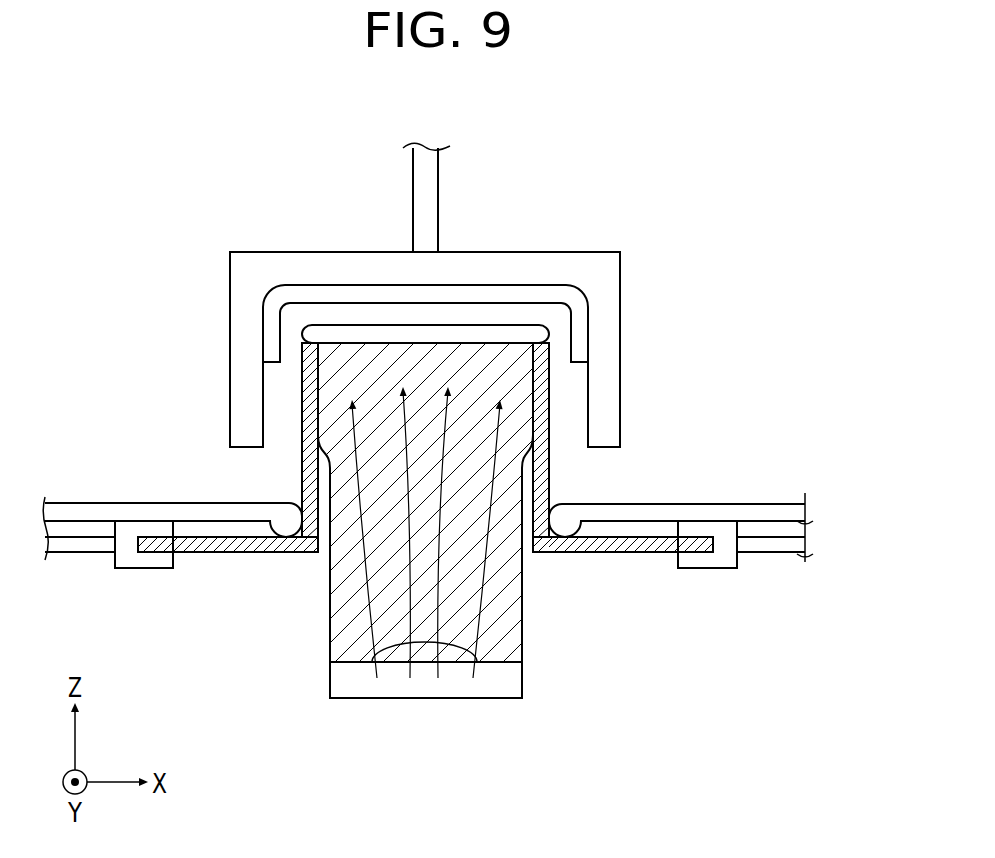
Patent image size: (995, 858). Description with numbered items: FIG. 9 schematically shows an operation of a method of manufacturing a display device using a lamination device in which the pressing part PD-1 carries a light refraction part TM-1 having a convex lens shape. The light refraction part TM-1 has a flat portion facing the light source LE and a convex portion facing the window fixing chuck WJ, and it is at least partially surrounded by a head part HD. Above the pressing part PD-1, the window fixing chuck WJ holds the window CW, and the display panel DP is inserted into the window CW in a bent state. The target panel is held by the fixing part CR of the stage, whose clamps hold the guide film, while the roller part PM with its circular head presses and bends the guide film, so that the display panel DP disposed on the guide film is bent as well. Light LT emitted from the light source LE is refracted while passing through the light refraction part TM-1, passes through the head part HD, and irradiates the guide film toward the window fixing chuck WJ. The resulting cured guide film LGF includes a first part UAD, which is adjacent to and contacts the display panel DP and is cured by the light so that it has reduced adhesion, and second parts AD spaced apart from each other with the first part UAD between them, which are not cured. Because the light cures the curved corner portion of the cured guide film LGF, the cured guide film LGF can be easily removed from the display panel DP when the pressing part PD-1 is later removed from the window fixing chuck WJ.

The window CW is at (311, 293).
The window fixing chuck WJ is at (362, 262).
The display panel DP is at (527, 312).
The first part UAD is at (535, 332).
The second parts AD is at (542, 388).
The cured guide film LGF is at (710, 325).
The roller part PM is at (792, 513).
The fixing part CR is at (792, 543).
The light LT is at (473, 595).
The light source LE is at (348, 682).
The light refraction part TM-1 is at (423, 655).
The head part HD is at (492, 652).
The pressing part PD-1 is at (515, 787).